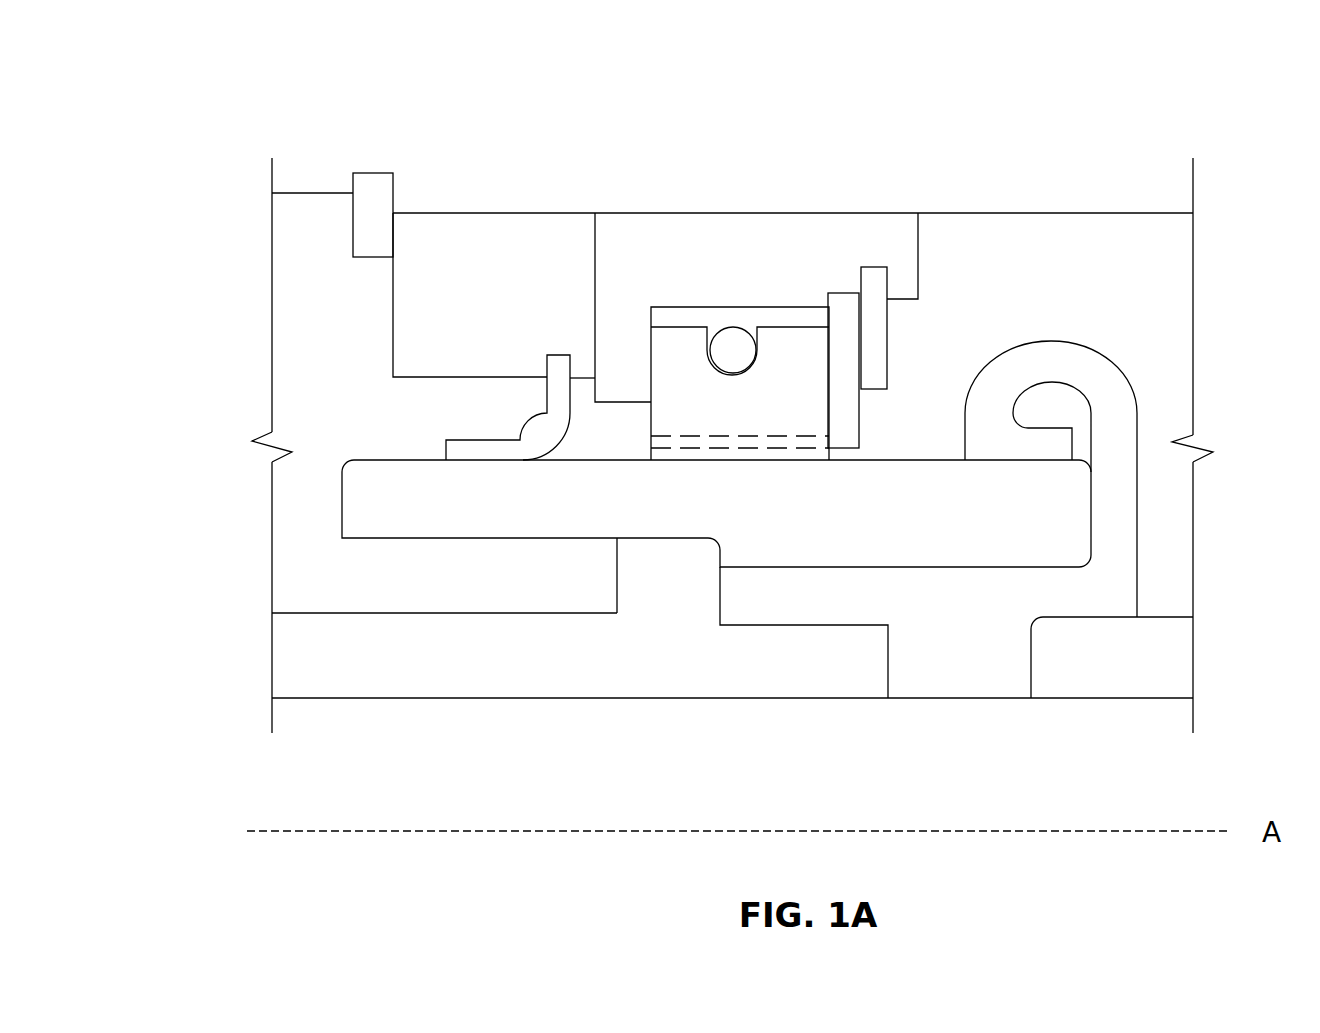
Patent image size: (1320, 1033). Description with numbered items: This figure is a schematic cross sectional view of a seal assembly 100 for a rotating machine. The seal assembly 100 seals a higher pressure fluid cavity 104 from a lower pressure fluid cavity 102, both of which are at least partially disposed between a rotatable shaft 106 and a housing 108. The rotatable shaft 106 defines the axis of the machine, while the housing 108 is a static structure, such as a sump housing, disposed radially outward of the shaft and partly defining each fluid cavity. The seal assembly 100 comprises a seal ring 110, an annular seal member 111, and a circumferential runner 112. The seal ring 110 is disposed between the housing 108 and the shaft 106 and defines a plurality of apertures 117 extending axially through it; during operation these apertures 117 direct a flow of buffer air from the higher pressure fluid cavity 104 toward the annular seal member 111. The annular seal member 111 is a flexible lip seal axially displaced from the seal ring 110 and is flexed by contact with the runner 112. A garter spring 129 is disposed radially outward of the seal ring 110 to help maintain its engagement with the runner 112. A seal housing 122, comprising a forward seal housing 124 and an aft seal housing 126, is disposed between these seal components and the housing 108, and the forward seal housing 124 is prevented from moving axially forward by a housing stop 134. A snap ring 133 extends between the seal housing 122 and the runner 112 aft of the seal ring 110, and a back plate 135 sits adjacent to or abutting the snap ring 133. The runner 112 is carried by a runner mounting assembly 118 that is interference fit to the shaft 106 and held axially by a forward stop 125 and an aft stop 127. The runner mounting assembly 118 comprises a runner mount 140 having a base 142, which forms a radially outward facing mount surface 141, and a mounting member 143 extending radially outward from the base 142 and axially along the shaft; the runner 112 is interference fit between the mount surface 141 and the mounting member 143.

The seal assembly 100 is at (1159, 78).
The lower pressure fluid cavity 102 is at (295, 242).
The higher pressure fluid cavity 104 is at (1073, 252).
The rotatable shaft 106 is at (1133, 757).
The housing 108 is at (719, 157).
The seal ring 110 is at (806, 413).
The annular seal member 111 is at (475, 445).
The runner 112 is at (804, 520).
The apertures 117 is at (719, 443).
The runner mounting assembly 118 is at (1176, 483).
The seal housing 122 is at (366, 344).
The forward seal housing 124 is at (513, 295).
The forward stop 125 is at (574, 675).
The aft seal housing 126 is at (756, 267).
The aft stop 127 is at (1134, 672).
The garter spring 129 is at (725, 348).
The snap ring 133 is at (868, 277).
The housing stop 134 is at (376, 180).
The back plate 135 is at (842, 305).
The runner mount 140 is at (986, 627).
The radially outward facing mount surface 141 is at (773, 567).
The base 142 is at (770, 605).
The mounting member 143 is at (1093, 375).